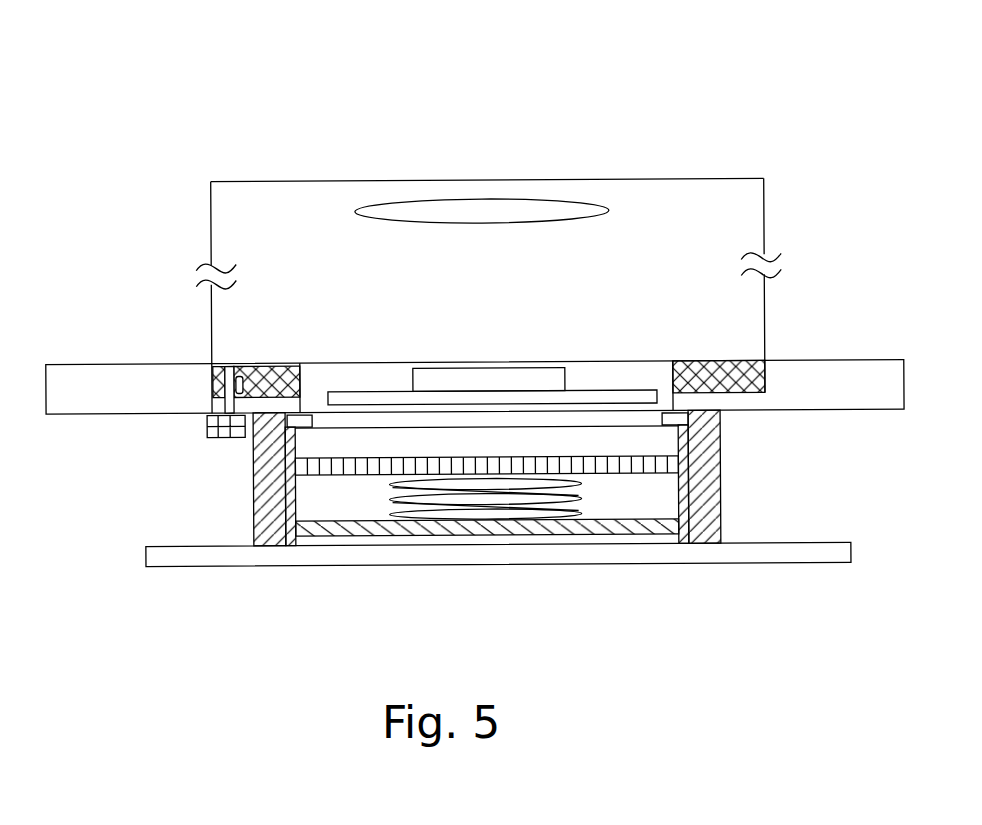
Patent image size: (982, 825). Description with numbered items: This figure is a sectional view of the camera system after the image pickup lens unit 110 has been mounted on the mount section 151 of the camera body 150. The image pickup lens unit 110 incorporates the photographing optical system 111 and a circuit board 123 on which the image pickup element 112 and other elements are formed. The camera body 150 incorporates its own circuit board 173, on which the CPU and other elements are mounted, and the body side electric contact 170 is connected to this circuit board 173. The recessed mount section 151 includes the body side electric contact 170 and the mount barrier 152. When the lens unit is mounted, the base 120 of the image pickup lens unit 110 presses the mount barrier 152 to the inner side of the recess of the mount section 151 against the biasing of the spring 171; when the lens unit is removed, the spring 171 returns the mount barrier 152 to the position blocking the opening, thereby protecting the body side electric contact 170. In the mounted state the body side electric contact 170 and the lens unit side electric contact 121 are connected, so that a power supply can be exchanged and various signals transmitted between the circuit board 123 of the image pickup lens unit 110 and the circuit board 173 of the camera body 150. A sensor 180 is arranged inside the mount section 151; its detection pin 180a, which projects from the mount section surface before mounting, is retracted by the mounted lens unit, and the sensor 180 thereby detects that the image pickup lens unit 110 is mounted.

The image pickup lens unit 110 is at (339, 118).
The photographing optical system 111 is at (570, 199).
The image pickup element 112 is at (527, 369).
The base 120 is at (765, 332).
The lens unit side electric contact 121 is at (715, 423).
The circuit board 123 is at (380, 391).
The camera body 150 is at (84, 328).
The mount section 151 is at (765, 375).
The mount barrier 152 is at (405, 457).
The body side electric contact 170 is at (678, 428).
The spring 171 is at (580, 497).
The circuit board 173 is at (168, 544).
The sensor 180 is at (217, 437).
The detection pin 180a is at (214, 411).